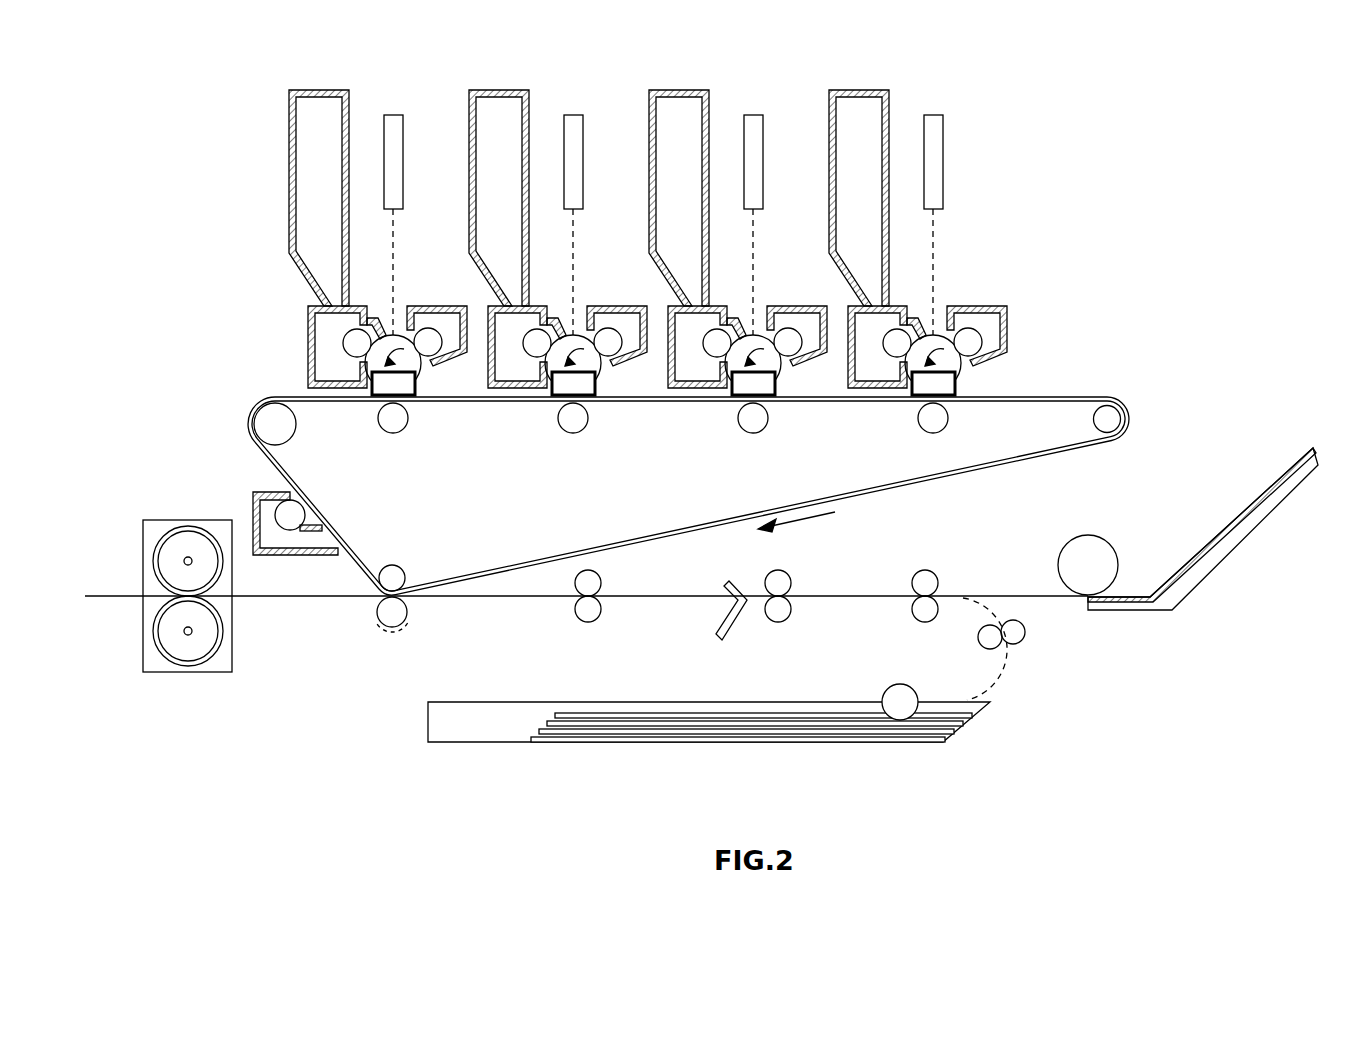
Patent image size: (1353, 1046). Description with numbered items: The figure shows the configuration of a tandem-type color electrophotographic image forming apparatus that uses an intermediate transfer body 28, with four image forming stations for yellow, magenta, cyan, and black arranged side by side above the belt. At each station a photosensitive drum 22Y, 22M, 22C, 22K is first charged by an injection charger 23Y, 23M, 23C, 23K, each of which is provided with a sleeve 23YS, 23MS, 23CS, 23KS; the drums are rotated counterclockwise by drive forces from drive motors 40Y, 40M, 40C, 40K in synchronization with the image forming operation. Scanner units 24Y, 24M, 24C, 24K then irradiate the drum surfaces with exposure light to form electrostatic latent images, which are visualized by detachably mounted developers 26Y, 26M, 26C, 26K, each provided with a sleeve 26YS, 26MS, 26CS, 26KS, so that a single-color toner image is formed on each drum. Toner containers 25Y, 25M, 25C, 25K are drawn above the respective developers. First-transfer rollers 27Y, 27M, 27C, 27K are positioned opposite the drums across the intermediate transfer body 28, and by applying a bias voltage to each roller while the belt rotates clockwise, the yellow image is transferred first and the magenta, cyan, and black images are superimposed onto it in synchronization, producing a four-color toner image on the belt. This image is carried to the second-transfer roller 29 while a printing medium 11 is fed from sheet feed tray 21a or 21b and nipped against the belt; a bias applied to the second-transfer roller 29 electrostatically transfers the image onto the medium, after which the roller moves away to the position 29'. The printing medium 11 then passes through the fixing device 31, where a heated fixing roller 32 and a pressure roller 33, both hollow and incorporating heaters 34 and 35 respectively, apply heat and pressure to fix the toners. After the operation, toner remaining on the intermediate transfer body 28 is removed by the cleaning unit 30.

The printing medium 11 is at (683, 712).
The sheet feed tray 21a is at (835, 716).
The sheet feed tray 21b is at (1238, 515).
The photosensitive drum 22Y is at (397, 345).
The photosensitive drum 22M is at (584, 314).
The photosensitive drum 22C is at (764, 314).
The photosensitive drum 22K is at (945, 314).
The injection charger 23Y is at (432, 352).
The injection charger 23M is at (625, 388).
The injection charger 23C is at (805, 388).
The injection charger 23K is at (989, 388).
The sleeve 23YS is at (408, 375).
The sleeve 23MS is at (592, 425).
The sleeve 23CS is at (772, 425).
The sleeve 23KS is at (957, 441).
The scanner unit 24Y is at (393, 113).
The scanner unit 24M is at (576, 191).
The scanner unit 24C is at (756, 191).
The scanner unit 24K is at (937, 191).
The toner cartridge (yellow) 25Y is at (318, 100).
The toner cartridge (magenta) 25M is at (499, 198).
The toner cartridge (cyan) 25C is at (679, 198).
The toner cartridge (black) 25K is at (859, 198).
The developer 26Y is at (327, 375).
The developer 26M is at (527, 377).
The developer 26C is at (707, 377).
The developer 26K is at (887, 377).
The sleeve 26YS is at (357, 350).
The sleeve 26MS is at (536, 403).
The sleeve 26CS is at (716, 403).
The sleeve 26KS is at (888, 403).
The first-transfer roller 27Y is at (393, 433).
The first-transfer roller 27M is at (577, 454).
The first-transfer roller 27C is at (757, 454).
The first-transfer roller 27K is at (938, 474).
The intermediate transfer body 28 is at (595, 545).
The second-transfer roller 29 is at (432, 617).
The second-transfer roller position 29' is at (425, 646).
The cleaning unit 30 is at (272, 540).
The fixing device 31 is at (228, 650).
The fixing roller 32 is at (210, 530).
The pressure roller 33 is at (210, 660).
The heater 34 is at (188, 557).
The heater 35 is at (188, 635).
The drive motor 40Y is at (436, 362).
The drive motor 40M is at (617, 316).
The drive motor 40C is at (797, 316).
The drive motor 40K is at (977, 316).